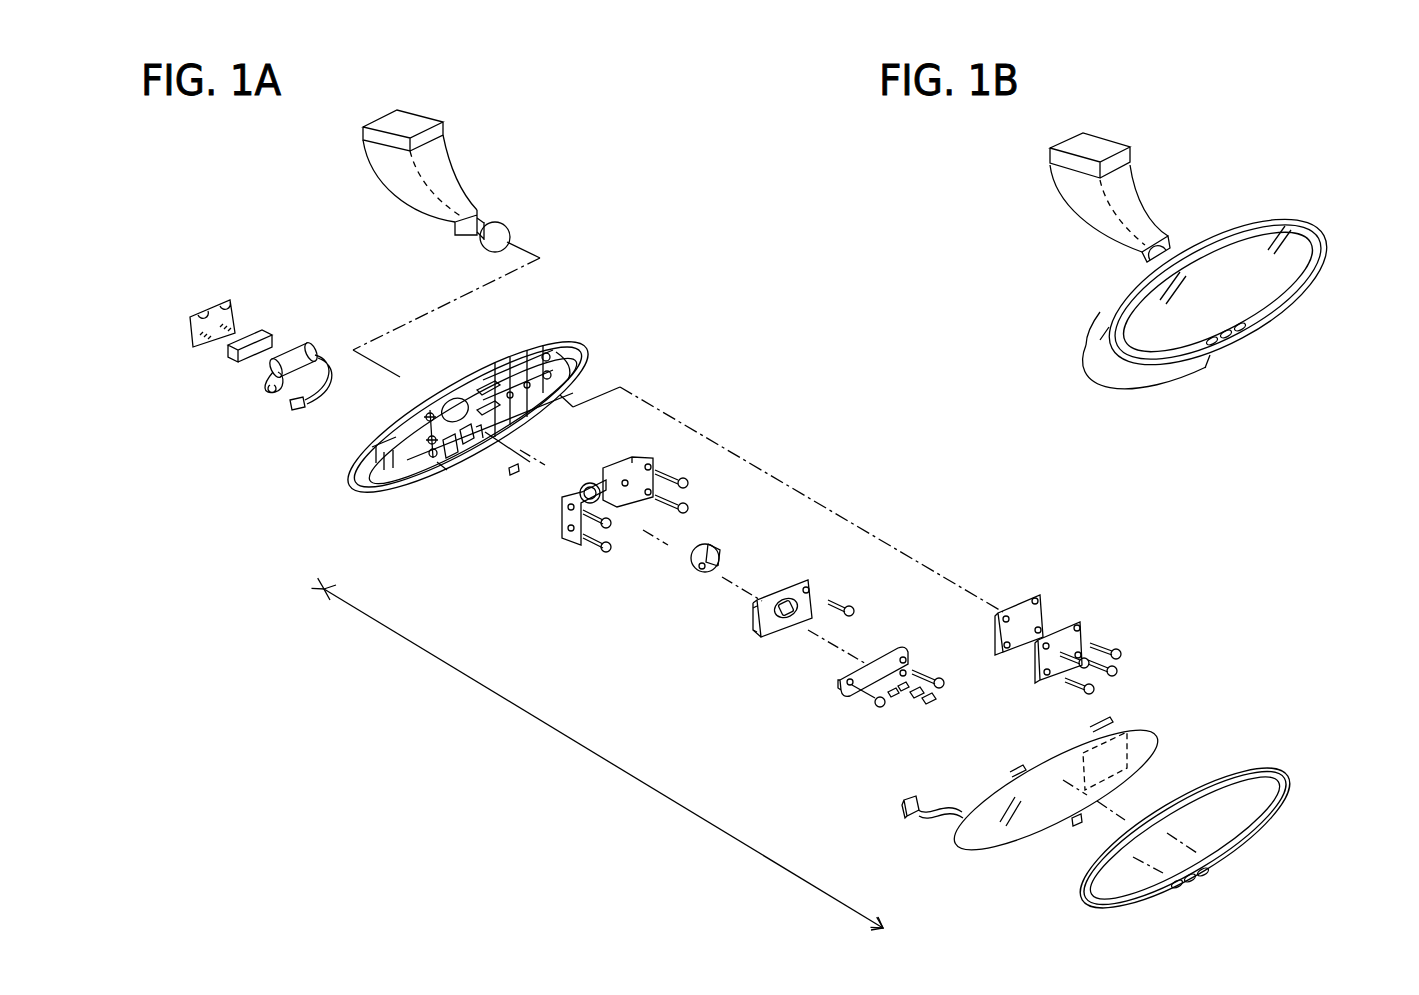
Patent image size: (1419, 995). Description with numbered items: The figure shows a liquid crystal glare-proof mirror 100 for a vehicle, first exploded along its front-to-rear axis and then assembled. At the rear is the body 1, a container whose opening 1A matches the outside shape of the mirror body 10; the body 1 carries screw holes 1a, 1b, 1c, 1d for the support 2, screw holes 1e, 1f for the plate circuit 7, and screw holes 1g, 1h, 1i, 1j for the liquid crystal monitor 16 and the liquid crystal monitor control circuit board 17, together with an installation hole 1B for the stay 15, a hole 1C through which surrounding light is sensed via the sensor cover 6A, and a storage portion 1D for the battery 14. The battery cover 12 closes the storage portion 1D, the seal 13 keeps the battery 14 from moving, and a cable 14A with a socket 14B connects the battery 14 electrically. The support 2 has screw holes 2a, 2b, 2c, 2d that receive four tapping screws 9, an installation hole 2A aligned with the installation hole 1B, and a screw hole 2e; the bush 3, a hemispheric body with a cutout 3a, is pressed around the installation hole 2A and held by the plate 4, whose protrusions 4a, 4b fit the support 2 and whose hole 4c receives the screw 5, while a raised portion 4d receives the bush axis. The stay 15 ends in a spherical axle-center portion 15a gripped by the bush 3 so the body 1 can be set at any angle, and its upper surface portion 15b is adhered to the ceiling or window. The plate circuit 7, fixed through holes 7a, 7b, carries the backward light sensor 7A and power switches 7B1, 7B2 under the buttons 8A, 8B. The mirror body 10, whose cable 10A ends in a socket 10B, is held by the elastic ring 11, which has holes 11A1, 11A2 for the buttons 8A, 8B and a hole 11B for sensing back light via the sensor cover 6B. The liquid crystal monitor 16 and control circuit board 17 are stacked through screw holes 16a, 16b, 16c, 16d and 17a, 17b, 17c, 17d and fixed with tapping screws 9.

In FIG. 1A, the liquid crystal glare-proof mirror 100 is at (815, 422).
In FIG. 1B, the liquid crystal glare-proof mirror 100 is at (1253, 168).
In FIG. 1A, the body 1 is at (546, 293).
In FIG. 1B, the body 1 is at (1287, 211).
In FIG. 1A, the opening 1A is at (565, 360).
In FIG. 1A, the installation hole 1B is at (450, 402).
In FIG. 1A, the hole 1C is at (450, 450).
In FIG. 1A, the storage portion 1D is at (400, 455).
In FIG. 1A, the screw hole 1a is at (430, 410).
In FIG. 1A, the screw hole 1b is at (428, 412).
In FIG. 1A, the screw hole 1c is at (497, 397).
In FIG. 1A, the screw hole 1d is at (482, 428).
In FIG. 1A, the screw hole 1e is at (440, 458).
In FIG. 1A, the screw hole 1f is at (492, 435).
In FIG. 1A, the screw hole 1g is at (510, 377).
In FIG. 1A, the screw hole 1h is at (512, 405).
In FIG. 1A, the screw hole 1i is at (547, 373).
In FIG. 1A, the screw hole 1j is at (574, 405).
In FIG. 1A, the support 2 is at (647, 452).
In FIG. 1A, the installation hole 2A is at (610, 475).
In FIG. 1A, the screw hole 2a is at (565, 510).
In FIG. 1A, the screw hole 2b is at (572, 530).
In FIG. 1A, the screw hole 2c is at (650, 467).
In FIG. 1A, the screw hole 2d is at (655, 492).
In FIG. 1A, the screw hole 2e is at (623, 485).
In FIG. 1A, the bush 3 is at (720, 551).
In FIG. 1A, the cutout 3a is at (700, 568).
In FIG. 1A, the plate 4 is at (811, 578).
In FIG. 1A, the protrusion 4a is at (753, 607).
In FIG. 1A, the protrusion 4b is at (753, 633).
In FIG. 1A, the hole 4c is at (813, 597).
In FIG. 1A, the plate opening 4d is at (793, 620).
In FIG. 1A, the screw 5 is at (850, 613).
In FIG. 1A, the sensor cover 6A is at (513, 473).
In FIG. 1A, the sensor cover 6B is at (1073, 823).
In FIG. 1A, the plate circuit 7 is at (907, 645).
In FIG. 1A, the hole 7a is at (847, 687).
In FIG. 1A, the hole 7b is at (912, 660).
In FIG. 1A, the backward light sensor 7A is at (883, 700).
In FIG. 1A, the power switch 7B1 is at (893, 702).
In FIG. 1A, the power switch 7B2 is at (900, 695).
In FIG. 1A, the button 8A is at (932, 707).
In FIG. 1B, the button 8A is at (1230, 334).
In FIG. 1A, the button 8B is at (922, 693).
In FIG. 1B, the button 8B is at (1240, 327).
In FIG. 1A, the tapping screw 9 is at (695, 488).
In FIG. 1A, the mirror body 10 is at (1163, 721).
In FIG. 1B, the mirror body 10 is at (1283, 264).
In FIG. 1A, the cable 10A is at (927, 823).
In FIG. 1A, the socket 10B is at (903, 810).
In FIG. 1A, the ring 11 is at (1293, 782).
In FIG. 1B, the ring 11 is at (1327, 238).
In FIG. 1A, the hole 11A1 is at (1197, 883).
In FIG. 1A, the hole 11A2 is at (1210, 870).
In FIG. 1A, the hole 11B is at (1183, 887).
In FIG. 1B, the hole 11B is at (1217, 345).
In FIG. 1A, the battery cover 12 is at (217, 318).
In FIG. 1A, the seal 13 is at (232, 356).
In FIG. 1A, the battery 14 is at (292, 350).
In FIG. 1A, the cable 14A is at (270, 390).
In FIG. 1A, the socket 14B is at (300, 413).
In FIG. 1A, the stay 15 is at (455, 147).
In FIG. 1B, the stay 15 is at (1137, 178).
In FIG. 1A, the axle-center portion 15a is at (497, 232).
In FIG. 1A, the upper surface portion 15b is at (397, 122).
In FIG. 1A, the liquid crystal monitor 16 is at (1130, 605).
In FIG. 1A, the screw hole 16a is at (1047, 655).
In FIG. 1A, the screw hole 16b is at (1053, 667).
In FIG. 1A, the screw hole 16c is at (1082, 627).
In FIG. 1A, the screw hole 16d is at (1114, 670).
In FIG. 1A, the liquid crystal monitor control circuit board 17 is at (1060, 542).
In FIG. 1A, the screw hole 17a is at (1013, 608).
In FIG. 1A, the screw hole 17b is at (1003, 640).
In FIG. 1A, the screw hole 17c is at (1043, 613).
In FIG. 1A, the screw hole 17d is at (1053, 637).